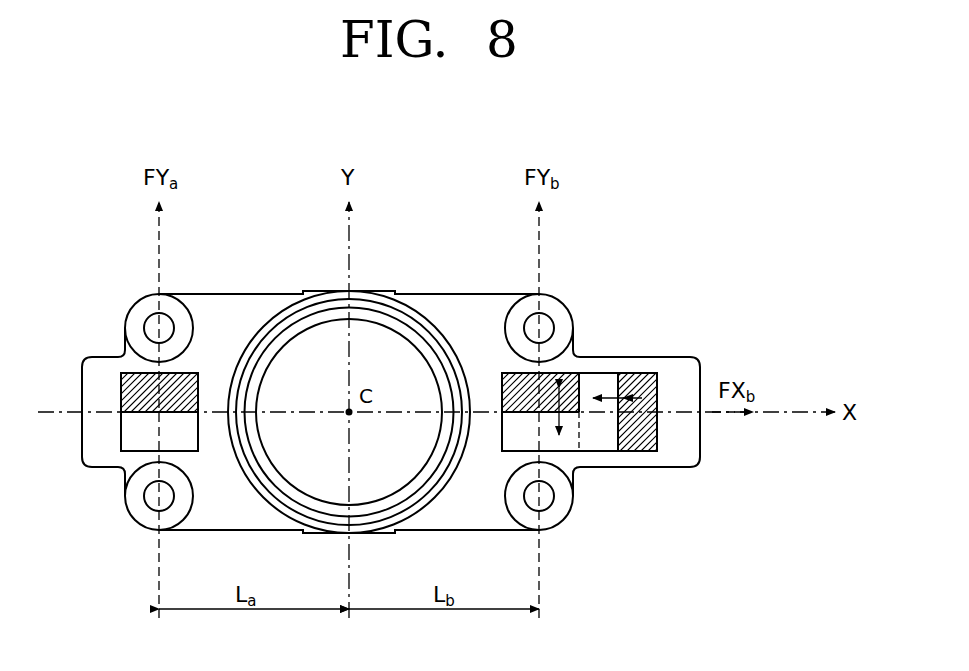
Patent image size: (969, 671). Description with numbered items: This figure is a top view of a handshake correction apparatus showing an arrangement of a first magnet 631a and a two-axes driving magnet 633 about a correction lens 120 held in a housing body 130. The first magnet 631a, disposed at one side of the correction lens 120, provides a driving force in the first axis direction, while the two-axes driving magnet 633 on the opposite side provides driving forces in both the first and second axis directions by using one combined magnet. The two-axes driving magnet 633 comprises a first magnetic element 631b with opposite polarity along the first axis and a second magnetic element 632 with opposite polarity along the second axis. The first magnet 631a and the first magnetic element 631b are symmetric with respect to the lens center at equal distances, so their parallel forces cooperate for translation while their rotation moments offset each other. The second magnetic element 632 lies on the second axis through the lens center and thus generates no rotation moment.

The correction lens 120 is at (372, 350).
The housing body 130 is at (472, 318).
The first magnet 631a is at (135, 440).
The first magnetic element 631b is at (565, 439).
The second magnetic element 632 is at (638, 440).
The two-axes driving magnet 633 is at (615, 497).